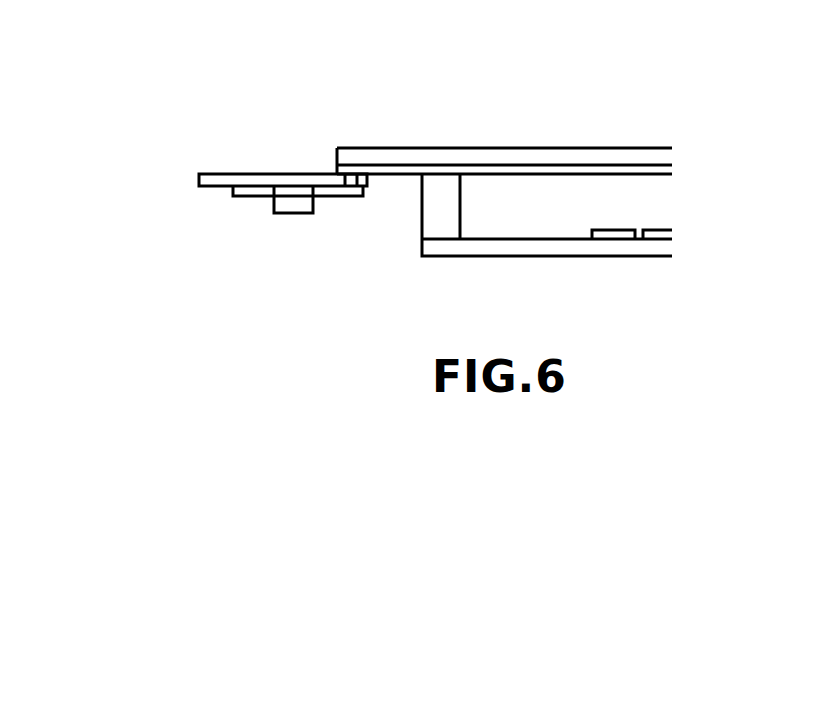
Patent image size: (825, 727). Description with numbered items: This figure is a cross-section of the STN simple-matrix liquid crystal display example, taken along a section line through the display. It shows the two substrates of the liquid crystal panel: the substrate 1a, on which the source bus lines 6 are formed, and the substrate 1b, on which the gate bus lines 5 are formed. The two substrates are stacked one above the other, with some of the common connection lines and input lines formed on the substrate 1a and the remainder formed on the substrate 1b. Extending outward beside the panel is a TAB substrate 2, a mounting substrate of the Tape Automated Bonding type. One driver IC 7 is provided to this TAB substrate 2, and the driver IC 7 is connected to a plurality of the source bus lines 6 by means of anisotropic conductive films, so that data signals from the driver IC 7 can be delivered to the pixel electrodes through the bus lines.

The substrate 1a is at (599, 257).
The substrate 1b is at (599, 148).
The TAB substrate 2 is at (194, 178).
The gate bus line 5 is at (525, 177).
The source bus line 6 is at (613, 230).
The driver IC 7 is at (292, 215).